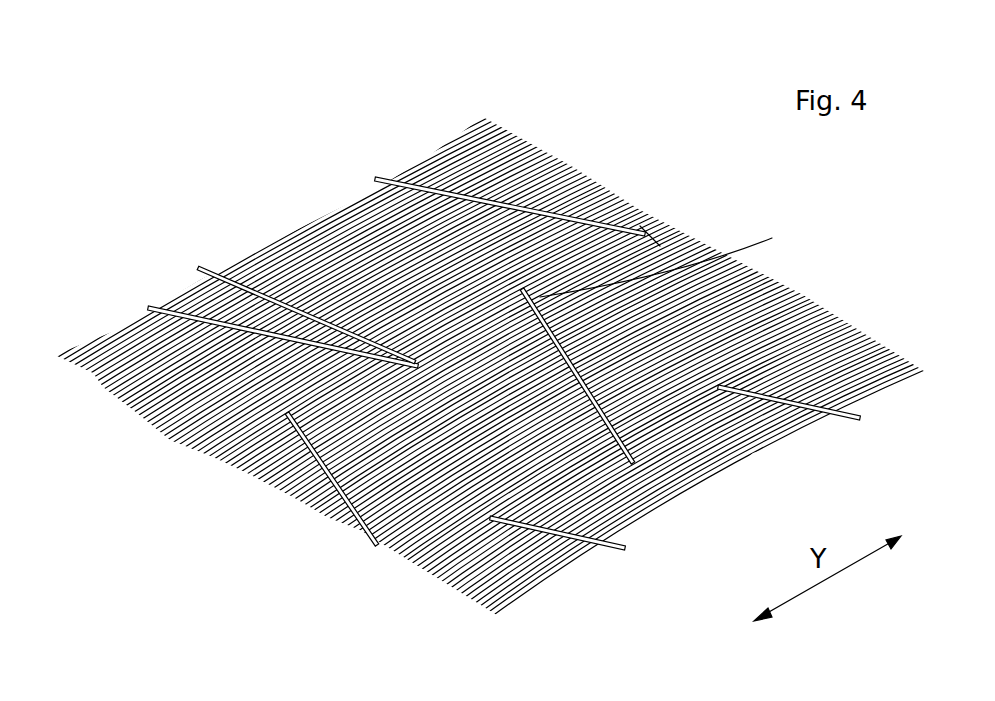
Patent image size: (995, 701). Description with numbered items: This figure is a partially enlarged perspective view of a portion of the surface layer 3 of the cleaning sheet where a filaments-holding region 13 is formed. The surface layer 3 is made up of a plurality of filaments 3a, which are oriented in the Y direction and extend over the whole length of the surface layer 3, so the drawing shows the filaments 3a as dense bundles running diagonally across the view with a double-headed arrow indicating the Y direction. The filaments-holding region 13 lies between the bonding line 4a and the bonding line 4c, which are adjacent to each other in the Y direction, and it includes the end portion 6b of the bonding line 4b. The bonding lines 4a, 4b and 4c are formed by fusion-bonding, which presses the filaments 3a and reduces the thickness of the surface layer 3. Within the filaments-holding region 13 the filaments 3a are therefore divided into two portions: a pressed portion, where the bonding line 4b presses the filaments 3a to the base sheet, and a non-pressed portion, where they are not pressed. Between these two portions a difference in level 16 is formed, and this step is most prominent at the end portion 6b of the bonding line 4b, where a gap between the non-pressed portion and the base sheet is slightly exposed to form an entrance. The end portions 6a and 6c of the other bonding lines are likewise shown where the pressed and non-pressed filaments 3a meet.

The filaments-holding region 13 is at (263, 198).
The surface layer 3 is at (341, 220).
The filament 3a is at (470, 222).
The bonding line 4a is at (160, 310).
The bonding line 4b is at (640, 423).
The bonding line 4c is at (388, 180).
The end portion of bonding line 6a is at (200, 270).
The end portion of bonding line 4b 6b is at (663, 334).
The end portion of bonding line 6c is at (650, 220).
The difference in level 16 is at (543, 200).